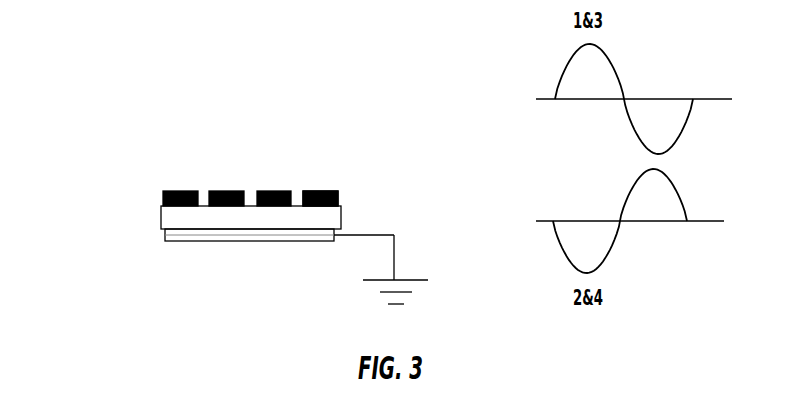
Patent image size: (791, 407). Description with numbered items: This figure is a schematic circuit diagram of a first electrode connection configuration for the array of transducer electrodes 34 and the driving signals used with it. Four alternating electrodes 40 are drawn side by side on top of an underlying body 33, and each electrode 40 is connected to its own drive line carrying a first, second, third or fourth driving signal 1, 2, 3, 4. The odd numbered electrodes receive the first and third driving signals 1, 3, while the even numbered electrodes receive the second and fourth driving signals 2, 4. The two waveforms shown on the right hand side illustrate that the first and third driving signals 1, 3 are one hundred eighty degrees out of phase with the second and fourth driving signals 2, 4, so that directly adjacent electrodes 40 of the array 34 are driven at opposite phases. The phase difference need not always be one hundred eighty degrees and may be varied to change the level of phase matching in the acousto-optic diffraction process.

The first driving signal 1 is at (143, 185).
The second driving signal 2 is at (165, 171).
The third driving signal 3 is at (189, 156).
The fourth driving signal 4 is at (212, 139).
The electrode 40 is at (335, 190).
The piezoelectric layer 33 is at (341, 212).
The array of transducer electrodes 34 is at (132, 213).